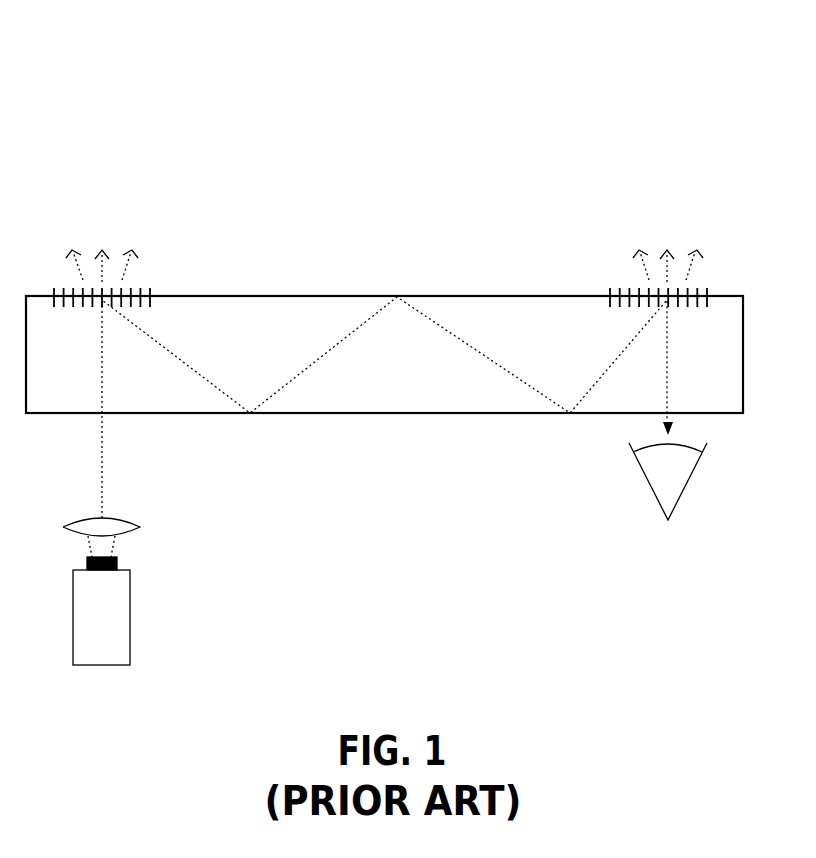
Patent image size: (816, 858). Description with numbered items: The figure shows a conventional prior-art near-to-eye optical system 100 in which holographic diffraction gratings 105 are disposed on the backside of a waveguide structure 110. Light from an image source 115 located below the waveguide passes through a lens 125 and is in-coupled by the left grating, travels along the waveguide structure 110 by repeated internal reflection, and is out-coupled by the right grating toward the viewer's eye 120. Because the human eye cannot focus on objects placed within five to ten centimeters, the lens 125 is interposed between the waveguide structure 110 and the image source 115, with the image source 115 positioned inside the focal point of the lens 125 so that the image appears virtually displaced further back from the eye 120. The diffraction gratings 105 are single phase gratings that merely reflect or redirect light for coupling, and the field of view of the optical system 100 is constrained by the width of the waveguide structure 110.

The near-to-eye optical system 100 is at (603, 81).
The holographic diffraction gratings 105 is at (163, 271).
The waveguide structure 110 is at (345, 296).
The image source 115 is at (88, 630).
The eye 120 is at (688, 483).
The lens 125 is at (127, 520).